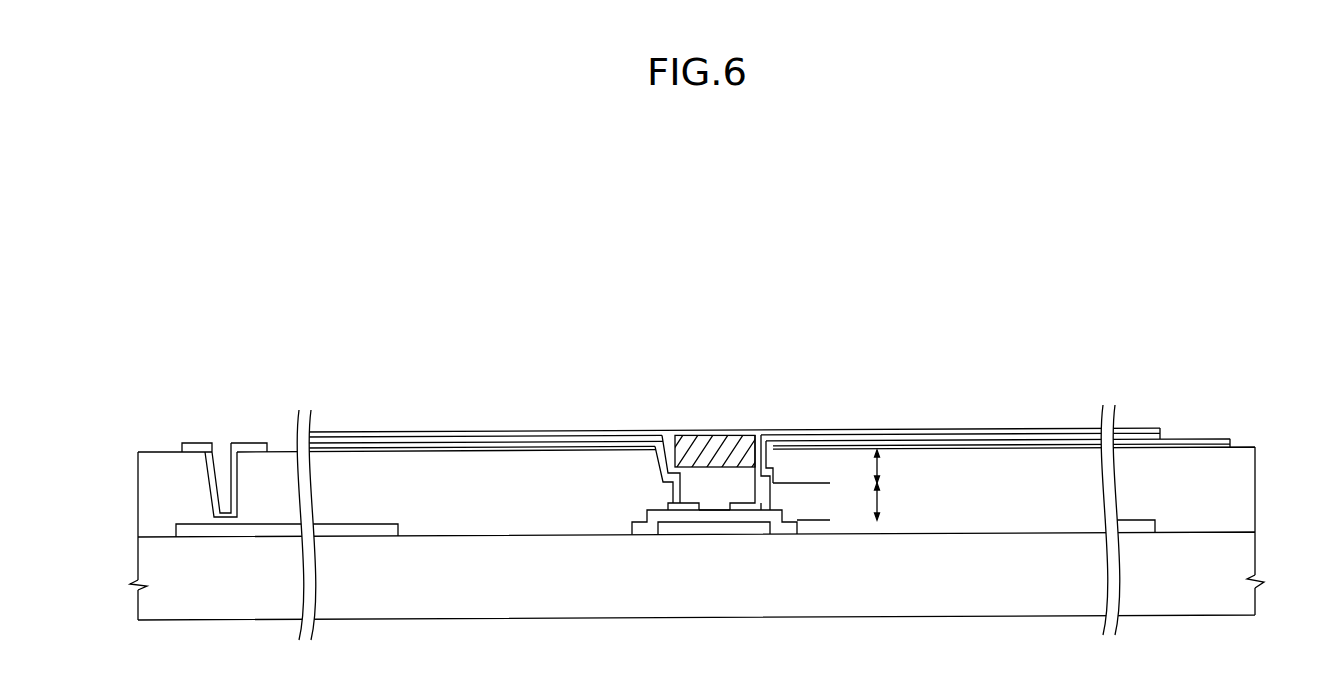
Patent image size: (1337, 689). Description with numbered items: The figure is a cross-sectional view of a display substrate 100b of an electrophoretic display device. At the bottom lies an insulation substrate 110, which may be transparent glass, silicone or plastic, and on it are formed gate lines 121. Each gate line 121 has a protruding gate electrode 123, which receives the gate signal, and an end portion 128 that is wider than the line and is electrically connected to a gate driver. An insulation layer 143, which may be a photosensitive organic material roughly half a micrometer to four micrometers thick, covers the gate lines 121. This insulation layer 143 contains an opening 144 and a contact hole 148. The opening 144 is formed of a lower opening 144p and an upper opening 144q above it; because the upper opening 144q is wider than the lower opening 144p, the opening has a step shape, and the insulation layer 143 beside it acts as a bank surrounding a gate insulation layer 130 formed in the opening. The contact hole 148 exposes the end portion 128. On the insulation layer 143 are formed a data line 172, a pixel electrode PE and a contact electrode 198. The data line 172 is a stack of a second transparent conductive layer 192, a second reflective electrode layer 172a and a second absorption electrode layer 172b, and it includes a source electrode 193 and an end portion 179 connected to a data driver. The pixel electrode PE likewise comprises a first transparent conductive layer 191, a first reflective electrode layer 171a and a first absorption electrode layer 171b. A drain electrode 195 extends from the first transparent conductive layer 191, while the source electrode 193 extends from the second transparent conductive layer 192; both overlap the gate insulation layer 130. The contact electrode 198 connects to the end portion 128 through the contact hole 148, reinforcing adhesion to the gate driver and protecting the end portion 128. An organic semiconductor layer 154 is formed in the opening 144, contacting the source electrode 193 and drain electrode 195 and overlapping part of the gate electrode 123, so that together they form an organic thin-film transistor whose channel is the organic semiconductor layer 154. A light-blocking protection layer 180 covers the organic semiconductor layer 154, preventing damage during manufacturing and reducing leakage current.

The display substrate 100b is at (123, 452).
The insulation substrate 110 is at (1248, 567).
The gate line 121 is at (358, 530).
The gate electrode 123 is at (718, 530).
The end portion 128 is at (206, 530).
The gate insulation layer 130 is at (735, 517).
The insulation layer 143 is at (1248, 495).
The opening 144 is at (790, 359).
The lower opening 144p is at (875, 468).
The upper opening 144q is at (875, 498).
The contact hole 148 is at (226, 462).
The organic semiconductor layer 154 is at (728, 485).
The first reflective electrode layer 171a is at (977, 440).
The first absorption electrode layer 171b is at (1032, 433).
The data line 172 is at (345, 360).
The second reflective electrode layer 172a is at (414, 442).
The second absorption electrode layer 172b is at (468, 436).
The end portion 179 is at (1200, 441).
The protection layer 180 is at (700, 445).
The first transparent conductive layer 191 is at (923, 445).
The second transparent conductive layer 192 is at (360, 447).
The source electrode 193 is at (688, 512).
The drain electrode 195 is at (748, 510).
The contact electrode 198 is at (197, 442).
The pixel electrode PE is at (910, 357).